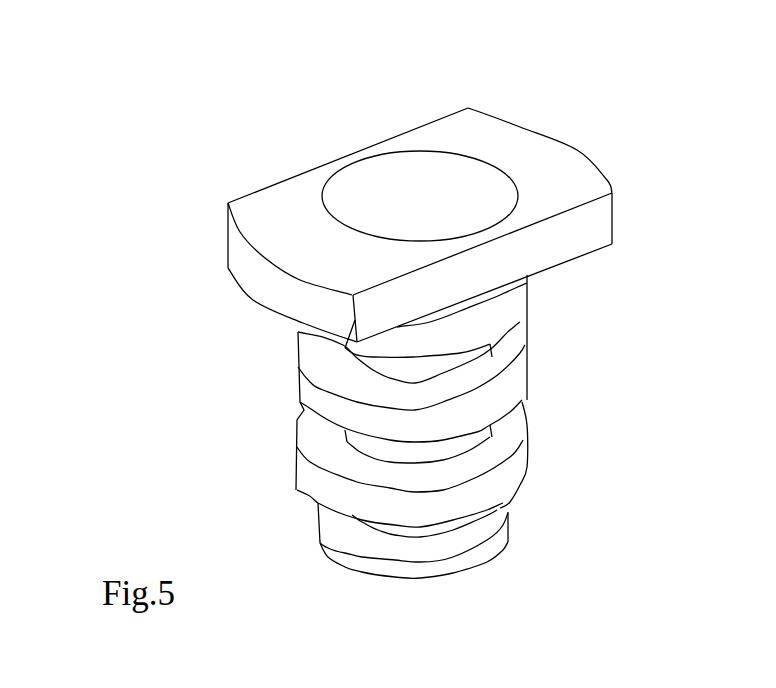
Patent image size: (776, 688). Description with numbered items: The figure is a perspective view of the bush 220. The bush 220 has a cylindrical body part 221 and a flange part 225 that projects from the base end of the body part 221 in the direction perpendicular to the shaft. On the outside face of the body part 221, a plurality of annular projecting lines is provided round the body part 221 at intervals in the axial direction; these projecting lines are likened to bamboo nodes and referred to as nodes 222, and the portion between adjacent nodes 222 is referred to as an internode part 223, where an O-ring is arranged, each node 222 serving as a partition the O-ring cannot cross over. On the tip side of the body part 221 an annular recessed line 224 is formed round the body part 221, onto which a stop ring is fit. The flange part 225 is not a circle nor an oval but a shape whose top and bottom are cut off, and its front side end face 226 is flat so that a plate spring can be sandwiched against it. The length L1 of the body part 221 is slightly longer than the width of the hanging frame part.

The bush 220 is at (420, 184).
The body part 221 is at (516, 419).
The node 222 is at (528, 310).
The internode part 223 is at (563, 272).
The recessed line 224 is at (508, 510).
The flange part 225 is at (565, 160).
The front side end face 226 is at (278, 196).
The length of the body part L1 is at (250, 300).